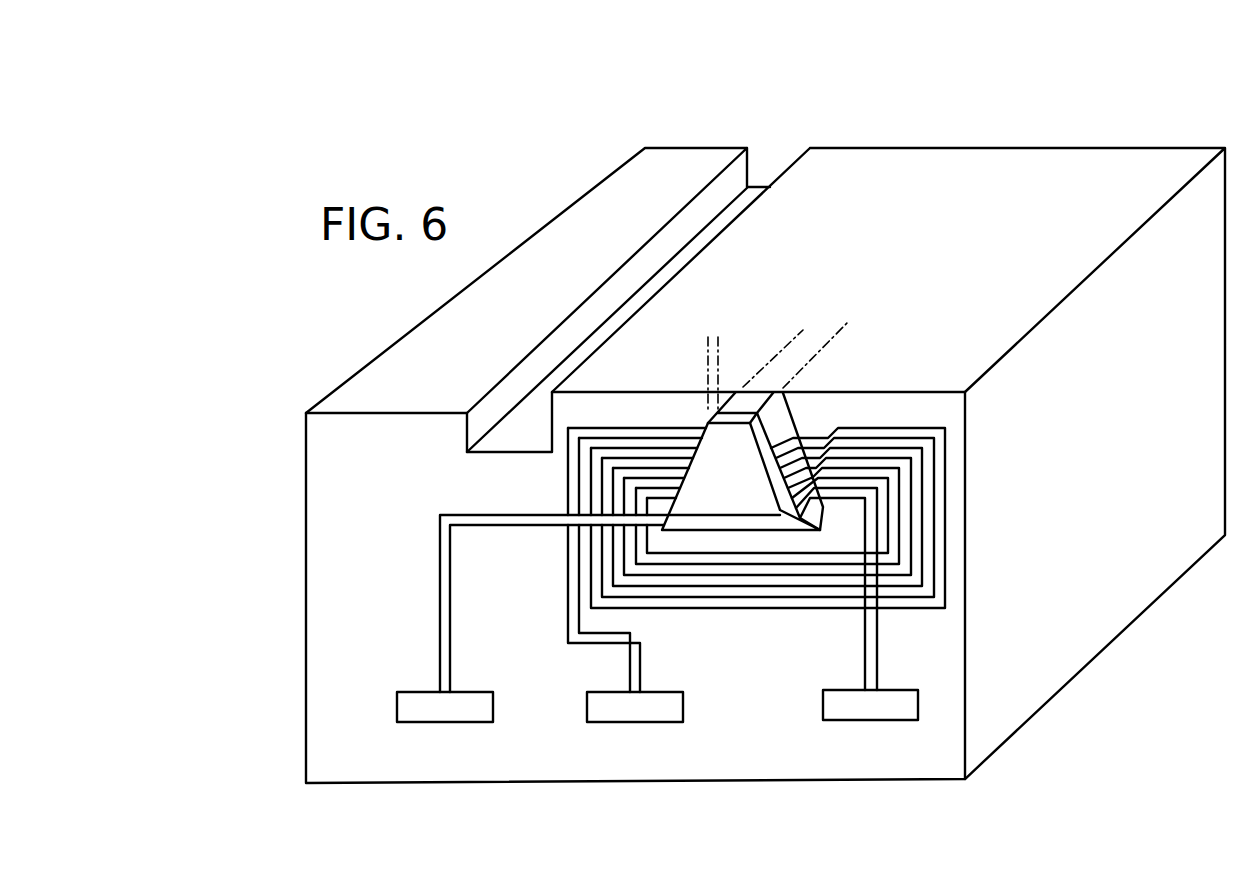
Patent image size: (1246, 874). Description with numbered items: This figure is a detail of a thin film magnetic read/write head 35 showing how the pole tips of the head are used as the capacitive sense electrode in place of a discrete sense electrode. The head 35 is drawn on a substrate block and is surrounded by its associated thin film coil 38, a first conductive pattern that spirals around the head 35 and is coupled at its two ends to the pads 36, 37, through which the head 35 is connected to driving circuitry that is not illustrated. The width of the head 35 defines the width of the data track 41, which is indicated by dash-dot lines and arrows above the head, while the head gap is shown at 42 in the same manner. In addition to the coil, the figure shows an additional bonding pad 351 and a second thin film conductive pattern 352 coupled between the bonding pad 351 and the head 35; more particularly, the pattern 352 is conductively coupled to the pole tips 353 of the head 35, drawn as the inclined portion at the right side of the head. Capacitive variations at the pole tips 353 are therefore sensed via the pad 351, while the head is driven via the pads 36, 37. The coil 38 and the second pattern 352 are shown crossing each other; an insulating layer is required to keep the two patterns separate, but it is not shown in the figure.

The thin film magnetic read/write head 35 is at (746, 488).
The bonding pad 351 is at (470, 692).
The thin film conductive pattern 352 is at (500, 518).
The pole tips 353 is at (772, 405).
The pad 36 is at (663, 688).
The pad 37 is at (887, 695).
The thin film coil 38 is at (588, 640).
The data track 41 is at (750, 342).
The head gap 42 is at (677, 382).